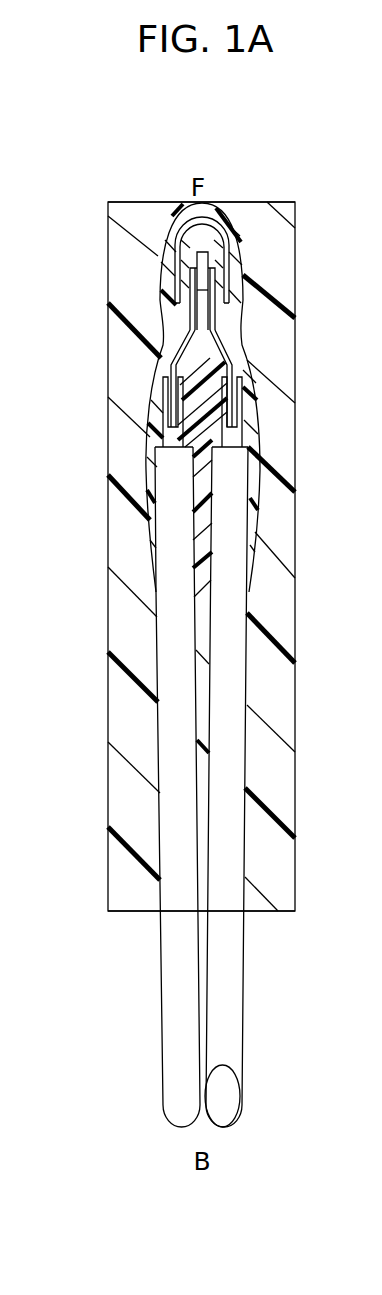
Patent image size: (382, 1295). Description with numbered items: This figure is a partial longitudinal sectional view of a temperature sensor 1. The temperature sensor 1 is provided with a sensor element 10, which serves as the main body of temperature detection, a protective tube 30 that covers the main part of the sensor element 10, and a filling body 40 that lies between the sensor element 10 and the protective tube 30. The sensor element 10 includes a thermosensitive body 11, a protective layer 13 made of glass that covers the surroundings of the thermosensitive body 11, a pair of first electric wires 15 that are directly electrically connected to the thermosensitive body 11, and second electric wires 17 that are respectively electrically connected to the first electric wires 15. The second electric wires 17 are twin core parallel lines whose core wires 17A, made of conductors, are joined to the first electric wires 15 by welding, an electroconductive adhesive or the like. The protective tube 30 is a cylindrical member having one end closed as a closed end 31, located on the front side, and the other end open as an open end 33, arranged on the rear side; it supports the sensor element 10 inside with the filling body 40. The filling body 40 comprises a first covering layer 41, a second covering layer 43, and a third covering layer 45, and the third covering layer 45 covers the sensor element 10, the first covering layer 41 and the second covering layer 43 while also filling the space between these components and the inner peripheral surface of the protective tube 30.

The temperature sensor 1 is at (312, 207).
The sensor element 10 is at (153, 607).
The thermosensitive body 11 is at (163, 262).
The protective layer 13 is at (197, 258).
The first electric wires 15 is at (164, 400).
The second electric wires 17 is at (157, 703).
The core wires 17A is at (155, 449).
The protective tube 30 is at (106, 534).
The closed end 31 is at (150, 203).
The open end 33 is at (125, 910).
The filling body 40 is at (52, 283).
The first covering layer 41 is at (189, 320).
The second covering layer 43 is at (178, 327).
The third covering layer 45 is at (133, 382).